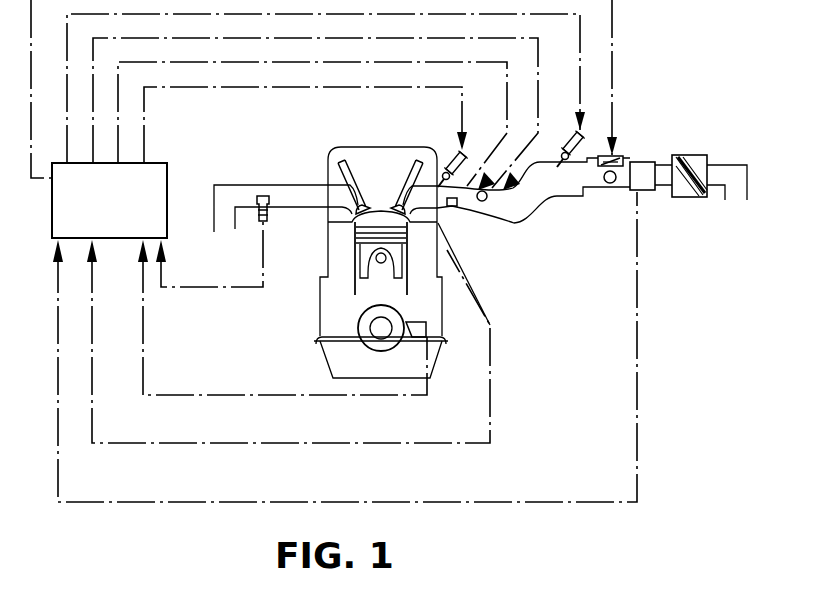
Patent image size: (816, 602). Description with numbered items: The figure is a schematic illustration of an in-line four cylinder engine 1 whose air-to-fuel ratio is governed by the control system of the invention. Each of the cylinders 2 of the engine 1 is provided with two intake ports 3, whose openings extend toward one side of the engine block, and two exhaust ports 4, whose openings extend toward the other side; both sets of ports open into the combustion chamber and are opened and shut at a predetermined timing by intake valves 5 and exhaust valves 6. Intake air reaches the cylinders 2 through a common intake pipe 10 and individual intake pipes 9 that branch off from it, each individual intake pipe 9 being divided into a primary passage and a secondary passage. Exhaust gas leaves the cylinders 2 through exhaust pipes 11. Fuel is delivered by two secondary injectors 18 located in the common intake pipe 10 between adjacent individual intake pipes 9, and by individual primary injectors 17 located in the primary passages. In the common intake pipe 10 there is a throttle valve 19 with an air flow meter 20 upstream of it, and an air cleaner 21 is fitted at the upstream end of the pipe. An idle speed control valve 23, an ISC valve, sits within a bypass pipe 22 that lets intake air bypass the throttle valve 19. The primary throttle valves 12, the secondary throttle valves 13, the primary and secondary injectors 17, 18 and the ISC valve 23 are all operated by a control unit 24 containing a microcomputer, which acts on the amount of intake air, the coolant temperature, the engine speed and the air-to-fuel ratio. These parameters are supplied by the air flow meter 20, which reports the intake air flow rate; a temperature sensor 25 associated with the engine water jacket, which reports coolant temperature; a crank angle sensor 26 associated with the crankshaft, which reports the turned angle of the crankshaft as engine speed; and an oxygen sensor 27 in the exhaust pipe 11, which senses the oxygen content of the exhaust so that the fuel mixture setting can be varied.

The engine 1 is at (272, 325).
The cylinders 2 is at (378, 232).
The intake ports 3 is at (412, 198).
The exhaust ports 4 is at (340, 197).
The intake valves 5 is at (393, 190).
The exhaust valves 6 is at (350, 223).
The individual intake pipes 9 is at (517, 210).
The common intake pipe 10 is at (558, 193).
The exhaust pipes 11 is at (262, 190).
The primary throttle valves 12 is at (482, 202).
The secondary throttle valves 13 is at (515, 223).
The primary injectors 17 is at (466, 158).
The secondary injectors 18 is at (565, 145).
The throttle valve 19 is at (613, 183).
The air flow meter 20 is at (645, 166).
The air cleaner 21 is at (683, 197).
The bypass pipe 22 is at (618, 156).
The idle speed control valve 23 is at (613, 155).
The control unit 24 is at (128, 215).
The temperature sensor 25 is at (433, 224).
The crank angle sensor 26 is at (412, 326).
The oxygen sensor 27 is at (258, 200).